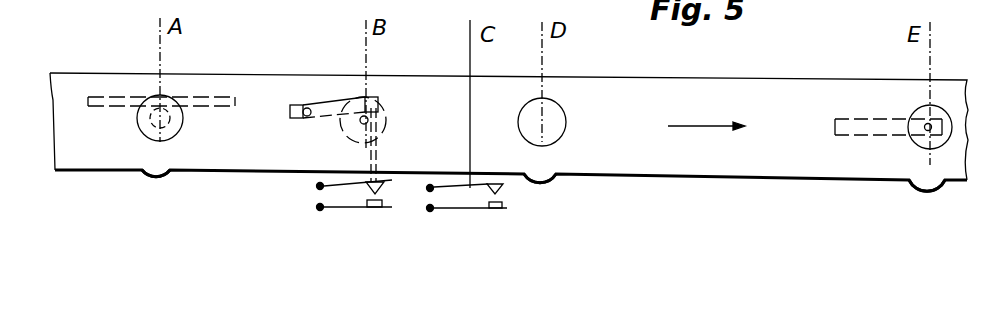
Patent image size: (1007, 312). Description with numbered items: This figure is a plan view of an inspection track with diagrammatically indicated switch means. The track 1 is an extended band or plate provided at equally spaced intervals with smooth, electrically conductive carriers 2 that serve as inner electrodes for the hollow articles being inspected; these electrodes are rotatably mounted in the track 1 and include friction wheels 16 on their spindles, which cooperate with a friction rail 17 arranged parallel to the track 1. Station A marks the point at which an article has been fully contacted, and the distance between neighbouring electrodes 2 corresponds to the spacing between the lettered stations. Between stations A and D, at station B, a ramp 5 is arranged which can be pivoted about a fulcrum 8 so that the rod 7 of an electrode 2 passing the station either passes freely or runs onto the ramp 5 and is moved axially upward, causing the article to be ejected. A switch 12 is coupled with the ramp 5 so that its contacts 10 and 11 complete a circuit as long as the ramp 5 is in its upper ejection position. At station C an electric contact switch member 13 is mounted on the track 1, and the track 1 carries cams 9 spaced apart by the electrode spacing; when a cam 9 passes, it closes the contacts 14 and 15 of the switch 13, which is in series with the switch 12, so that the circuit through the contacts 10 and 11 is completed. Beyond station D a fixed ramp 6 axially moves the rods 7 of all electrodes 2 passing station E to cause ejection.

The track 1 is at (268, 80).
The carrier 2 is at (148, 133).
The ramp 5 is at (340, 100).
The ramp 6 is at (856, 131).
The rod 7 is at (926, 131).
The fulcrum 8 is at (306, 115).
The cam 9 is at (163, 176).
The contact 10 is at (340, 186).
The contact 11 is at (340, 206).
The switch 12 is at (392, 194).
The electric contact switch member 13 is at (510, 195).
The contact 14 is at (428, 192).
The contact 15 is at (467, 219).
The friction wheel 16 is at (171, 122).
The friction rail 17 is at (96, 105).